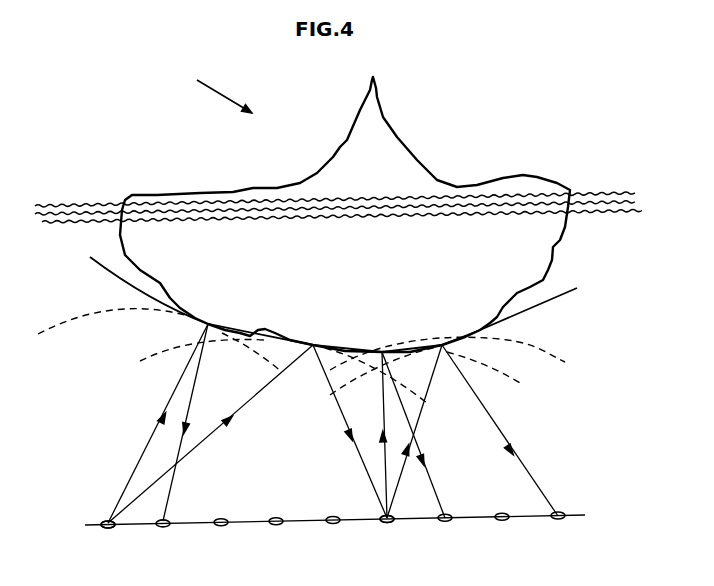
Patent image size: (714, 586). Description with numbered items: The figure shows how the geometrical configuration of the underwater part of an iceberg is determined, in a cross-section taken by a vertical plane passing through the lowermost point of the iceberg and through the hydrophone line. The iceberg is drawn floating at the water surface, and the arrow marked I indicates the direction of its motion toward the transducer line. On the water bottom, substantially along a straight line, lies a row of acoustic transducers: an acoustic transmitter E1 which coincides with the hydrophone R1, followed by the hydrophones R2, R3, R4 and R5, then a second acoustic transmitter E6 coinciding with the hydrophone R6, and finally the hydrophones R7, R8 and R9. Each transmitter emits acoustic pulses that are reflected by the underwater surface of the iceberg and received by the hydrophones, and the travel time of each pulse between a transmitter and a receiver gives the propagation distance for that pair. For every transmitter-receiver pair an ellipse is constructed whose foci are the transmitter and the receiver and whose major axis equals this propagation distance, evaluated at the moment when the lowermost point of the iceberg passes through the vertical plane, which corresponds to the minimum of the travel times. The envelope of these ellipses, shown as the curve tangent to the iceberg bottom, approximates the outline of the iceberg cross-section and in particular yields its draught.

The incident ultrasonic wave I is at (218, 89).
The acoustic transmitter E1 is at (104, 537).
The hydrophone R1 is at (114, 537).
The hydrophone R2 is at (164, 536).
The hydrophone R3 is at (222, 536).
The hydrophone R4 is at (278, 535).
The hydrophone R5 is at (335, 535).
The acoustic transmitter E6 is at (383, 534).
The hydrophone R6 is at (393, 534).
The hydrophone R7 is at (447, 532).
The hydrophone R8 is at (504, 532).
The hydrophone R9 is at (560, 531).